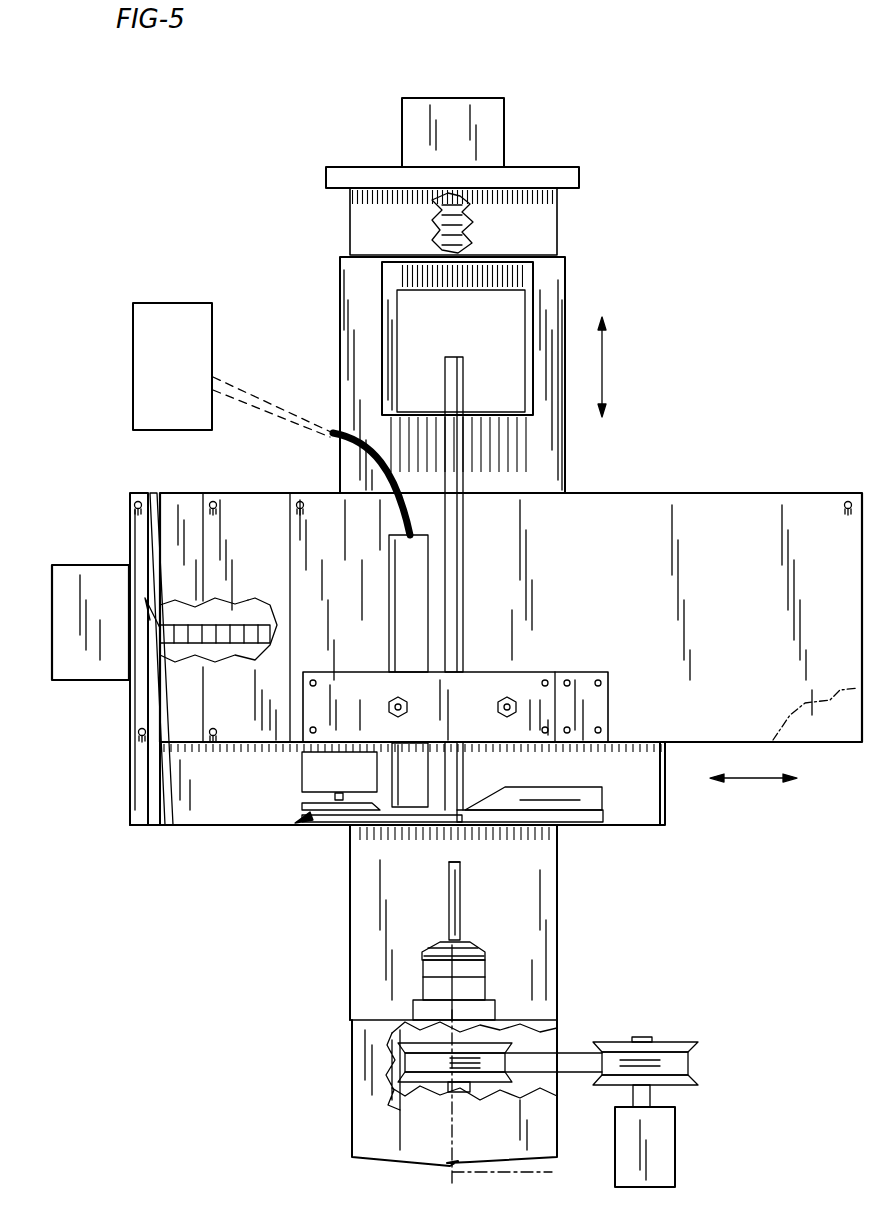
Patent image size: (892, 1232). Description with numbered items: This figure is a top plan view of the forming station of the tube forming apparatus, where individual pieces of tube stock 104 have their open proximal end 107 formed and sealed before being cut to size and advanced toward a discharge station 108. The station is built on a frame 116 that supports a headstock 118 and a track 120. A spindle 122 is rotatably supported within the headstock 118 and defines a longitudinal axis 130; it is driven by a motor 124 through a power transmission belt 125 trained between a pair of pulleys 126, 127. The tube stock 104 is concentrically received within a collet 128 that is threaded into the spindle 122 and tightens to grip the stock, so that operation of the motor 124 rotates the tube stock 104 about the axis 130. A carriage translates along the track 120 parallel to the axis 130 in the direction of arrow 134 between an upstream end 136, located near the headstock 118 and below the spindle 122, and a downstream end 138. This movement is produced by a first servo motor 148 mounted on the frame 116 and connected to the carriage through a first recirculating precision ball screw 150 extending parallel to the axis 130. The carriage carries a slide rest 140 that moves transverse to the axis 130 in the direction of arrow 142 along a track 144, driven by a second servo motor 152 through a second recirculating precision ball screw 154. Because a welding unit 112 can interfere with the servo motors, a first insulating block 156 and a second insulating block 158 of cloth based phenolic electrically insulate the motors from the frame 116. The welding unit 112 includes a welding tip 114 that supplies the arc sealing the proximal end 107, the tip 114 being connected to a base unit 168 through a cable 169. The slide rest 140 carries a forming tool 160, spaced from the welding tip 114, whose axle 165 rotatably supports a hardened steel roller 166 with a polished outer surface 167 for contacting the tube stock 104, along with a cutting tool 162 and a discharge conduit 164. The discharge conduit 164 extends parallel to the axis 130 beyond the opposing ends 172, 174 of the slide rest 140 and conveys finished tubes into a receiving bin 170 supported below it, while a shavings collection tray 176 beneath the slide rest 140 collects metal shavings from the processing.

The tube stock 104 is at (460, 898).
The open proximal end 107 is at (460, 862).
The discharge station 108 is at (586, 219).
The welding unit 112 is at (164, 292).
The welding tip 114 is at (389, 638).
The frame 116 is at (350, 905).
The headstock 118 is at (352, 1100).
The track 120 is at (510, 879).
The spindle 122 is at (423, 965).
The motor 124 is at (676, 1150).
The power transmission belt 125 is at (573, 1053).
The pulley 126 is at (690, 1042).
The pulley 127 is at (392, 1105).
The collet 128 is at (460, 938).
The longitudinal axis 130 is at (525, 1097).
The arrow 134 is at (603, 365).
The upstream end 136 is at (350, 1020).
The downstream end 138 is at (350, 218).
The slide rest 140 is at (752, 500).
The arrow 142 is at (755, 780).
The track 144 is at (845, 736).
The first servo motor 148 is at (505, 110).
The first recirculating precision ball screw 150 is at (475, 235).
The second servo motor 152 is at (98, 560).
The second recirculating precision ball screw 154 is at (250, 620).
The first insulating block 156 is at (343, 169).
The second insulating block 158 is at (130, 700).
The forming tool 160 is at (307, 818).
The cutting tool 162 is at (600, 812).
The discharge conduit 164 is at (463, 627).
The axle 165 is at (333, 798).
The roller 166 is at (347, 817).
The polished outer surface 167 is at (390, 830).
The base unit 168 is at (133, 375).
The cable 169 is at (325, 440).
The receiving bin 170 is at (491, 337).
The opposing end 172 is at (697, 745).
The opposing end 174 is at (657, 492).
The shavings collection tray 176 is at (205, 807).